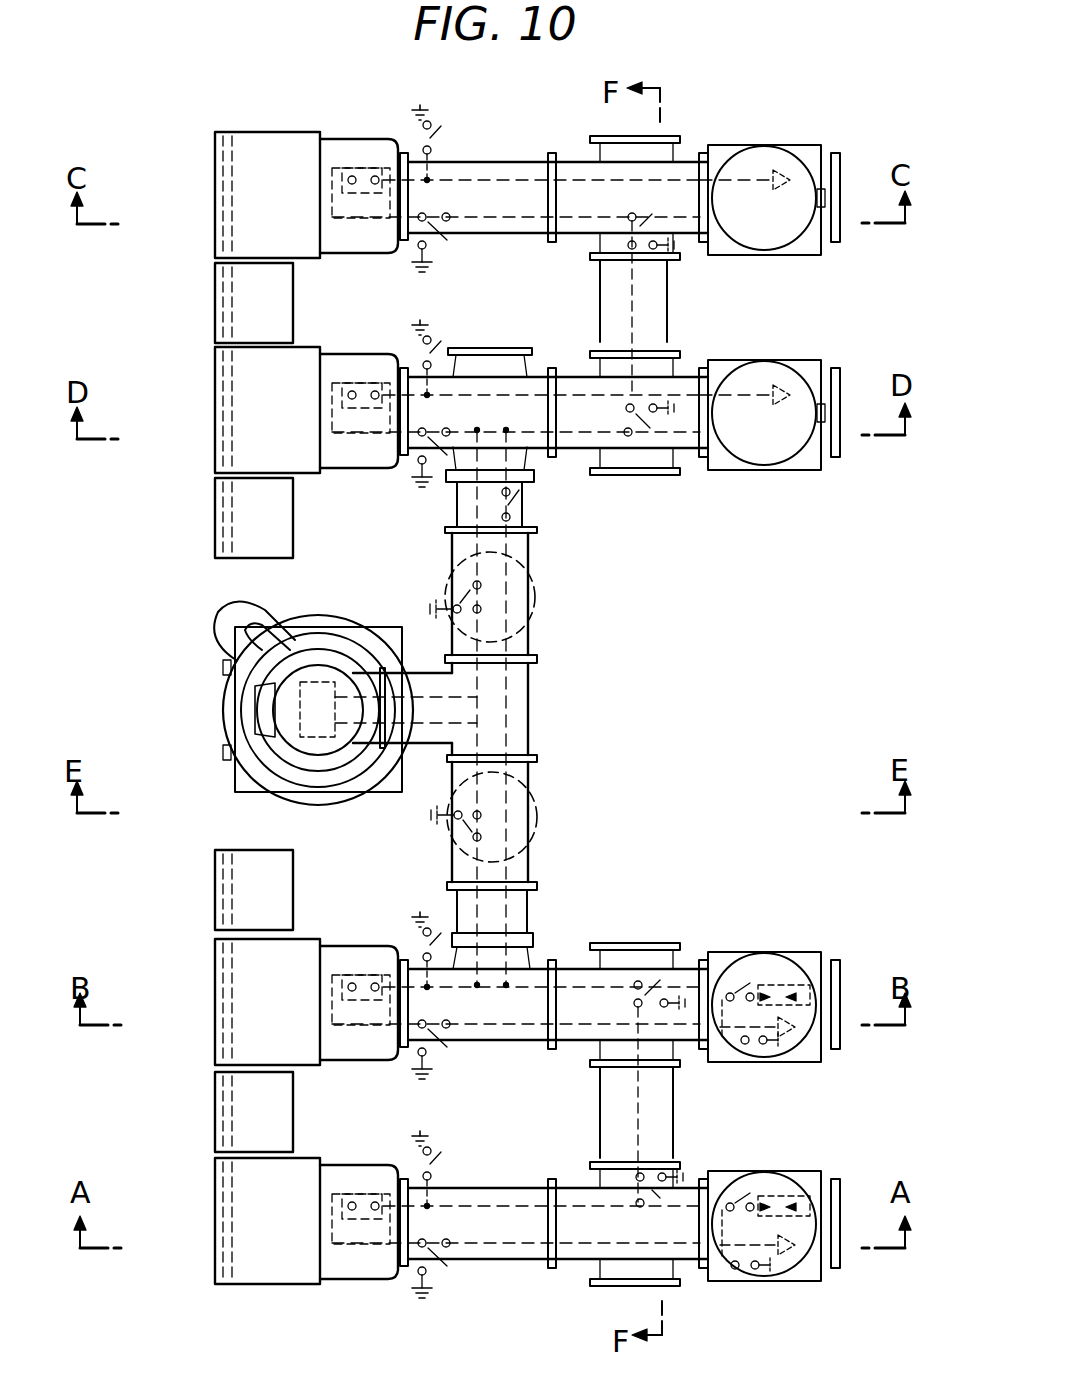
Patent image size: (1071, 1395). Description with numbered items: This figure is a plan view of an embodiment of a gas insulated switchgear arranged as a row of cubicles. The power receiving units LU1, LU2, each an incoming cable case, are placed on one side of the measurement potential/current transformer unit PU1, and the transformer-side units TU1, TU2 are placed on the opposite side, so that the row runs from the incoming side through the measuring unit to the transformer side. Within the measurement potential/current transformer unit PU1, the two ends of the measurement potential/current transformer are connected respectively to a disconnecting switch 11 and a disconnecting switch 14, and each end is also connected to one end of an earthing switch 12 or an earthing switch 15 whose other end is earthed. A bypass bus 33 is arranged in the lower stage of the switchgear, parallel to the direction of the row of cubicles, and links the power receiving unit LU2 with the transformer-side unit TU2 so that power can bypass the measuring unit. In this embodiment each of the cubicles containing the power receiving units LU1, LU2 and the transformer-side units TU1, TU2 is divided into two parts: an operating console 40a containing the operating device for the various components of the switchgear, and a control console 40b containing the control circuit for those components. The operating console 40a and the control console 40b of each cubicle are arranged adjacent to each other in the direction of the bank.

The transformer-side unit TU1 is at (207, 128).
The transformer-side unit TU2 is at (207, 343).
The power receiving unit LU1 is at (207, 1072).
The power receiving unit LU2 is at (207, 848).
The measurement potential/current transformer unit PU1 is at (207, 835).
The operating console 40a is at (215, 166).
The control console 40b is at (215, 300).
The bypass bus 33 is at (508, 690).
The disconnecting switch 14 is at (450, 585).
The earthing switch 15 is at (430, 607).
The disconnecting switch 11 is at (455, 835).
The earthing switch 12 is at (432, 815).